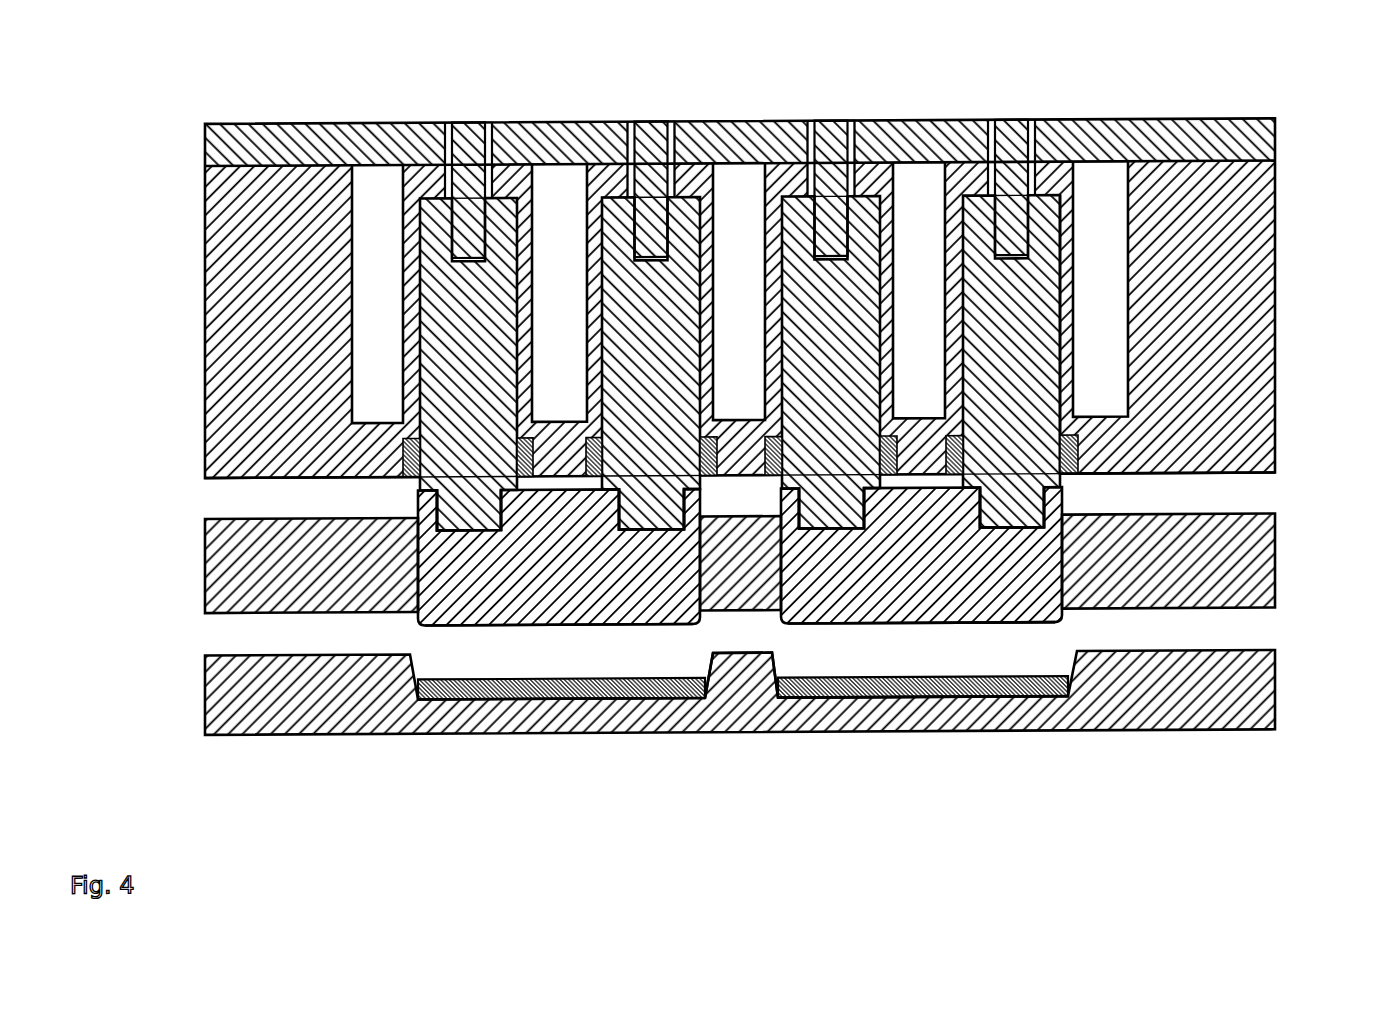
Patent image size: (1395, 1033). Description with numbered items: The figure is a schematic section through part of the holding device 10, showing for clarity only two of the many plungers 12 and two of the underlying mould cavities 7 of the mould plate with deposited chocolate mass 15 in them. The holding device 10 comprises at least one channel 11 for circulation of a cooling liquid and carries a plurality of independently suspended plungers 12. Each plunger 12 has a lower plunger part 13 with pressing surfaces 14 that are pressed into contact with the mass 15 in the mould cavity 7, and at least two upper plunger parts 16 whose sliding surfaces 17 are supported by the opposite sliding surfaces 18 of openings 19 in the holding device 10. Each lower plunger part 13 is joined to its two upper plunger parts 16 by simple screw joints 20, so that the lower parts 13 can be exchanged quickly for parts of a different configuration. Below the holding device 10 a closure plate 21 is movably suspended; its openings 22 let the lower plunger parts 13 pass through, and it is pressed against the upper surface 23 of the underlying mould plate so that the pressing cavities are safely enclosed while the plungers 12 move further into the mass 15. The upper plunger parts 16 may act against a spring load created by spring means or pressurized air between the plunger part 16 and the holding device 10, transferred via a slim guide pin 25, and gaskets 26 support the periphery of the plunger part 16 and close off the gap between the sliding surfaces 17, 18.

The mould cavity 7 is at (775, 682).
The holding device 10 is at (233, 221).
The channel 11 is at (1100, 192).
The plunger 12 is at (385, 498).
The lower plunger part 13 is at (500, 604).
The pressing surface 14 is at (458, 626).
The mass 15 is at (547, 699).
The upper plunger part 16 is at (630, 343).
The sliding surface 17 is at (1233, 165).
The opposite sliding surface 18 is at (1068, 264).
The opening 19 is at (1082, 409).
The screw joint 20 is at (620, 528).
The closure plate 21 is at (222, 572).
The opening 22 is at (417, 556).
The upper surface 23 is at (1237, 654).
The slim guide pin 25 is at (1008, 124).
The gasket 26 is at (1077, 452).